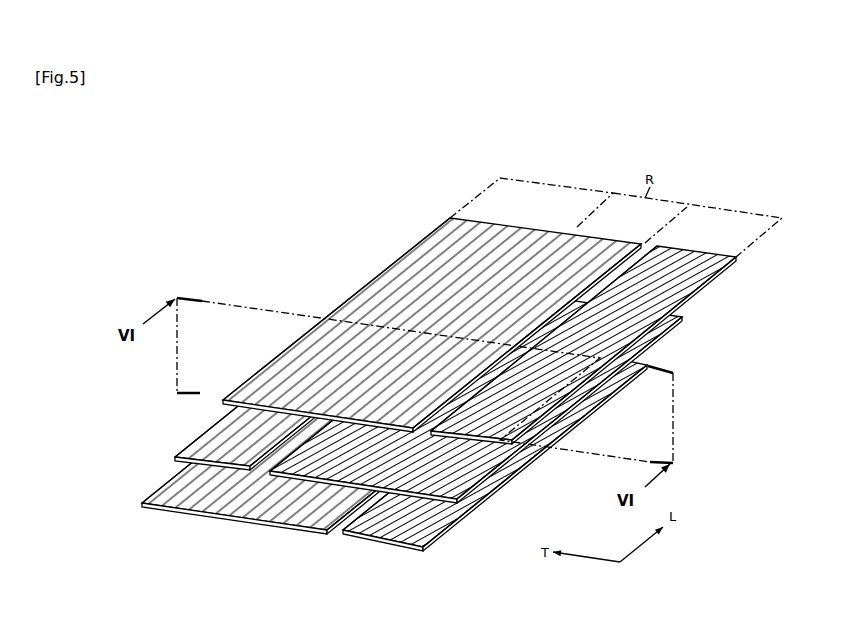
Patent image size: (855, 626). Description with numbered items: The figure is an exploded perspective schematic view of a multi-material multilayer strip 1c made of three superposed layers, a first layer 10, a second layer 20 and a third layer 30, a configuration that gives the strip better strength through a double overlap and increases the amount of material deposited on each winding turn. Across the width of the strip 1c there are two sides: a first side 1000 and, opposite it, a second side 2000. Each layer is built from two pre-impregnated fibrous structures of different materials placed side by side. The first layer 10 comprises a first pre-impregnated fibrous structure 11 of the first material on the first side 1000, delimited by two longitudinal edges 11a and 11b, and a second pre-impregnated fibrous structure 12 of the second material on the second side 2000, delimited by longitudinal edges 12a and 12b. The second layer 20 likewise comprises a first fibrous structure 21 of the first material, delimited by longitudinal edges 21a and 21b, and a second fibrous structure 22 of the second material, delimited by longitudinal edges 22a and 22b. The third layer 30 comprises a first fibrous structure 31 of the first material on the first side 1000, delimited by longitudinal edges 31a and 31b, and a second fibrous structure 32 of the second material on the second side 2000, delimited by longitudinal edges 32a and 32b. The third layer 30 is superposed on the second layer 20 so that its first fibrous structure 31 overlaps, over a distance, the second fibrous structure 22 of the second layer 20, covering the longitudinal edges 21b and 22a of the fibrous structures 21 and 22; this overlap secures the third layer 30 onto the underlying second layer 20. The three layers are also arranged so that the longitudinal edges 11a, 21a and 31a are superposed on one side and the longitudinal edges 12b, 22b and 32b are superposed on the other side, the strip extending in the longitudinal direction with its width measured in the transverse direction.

The multilayer strip 1c is at (448, 382).
The first layer 10 is at (387, 446).
The first pre-impregnated fibrous structure 11 is at (339, 443).
The longitudinal edge 11a is at (167, 482).
The longitudinal edge 11b is at (329, 532).
The second pre-impregnated fibrous structure 12 is at (493, 459).
The longitudinal edge 12a is at (347, 533).
The longitudinal edge 12b is at (598, 406).
The second layer 20 is at (425, 389).
The first pre-impregnated fibrous structure 21 is at (309, 372).
The longitudinal edge 21a is at (226, 416).
The longitudinal edge 21b is at (283, 443).
The second pre-impregnated fibrous structure 22 is at (490, 396).
The longitudinal edge 22a is at (297, 450).
The longitudinal edge 22b is at (672, 337).
The third layer 30 is at (496, 319).
The first pre-impregnated fibrous structure 31 is at (434, 313).
The longitudinal edge 31a is at (447, 221).
The longitudinal edge 31b is at (646, 240).
The second pre-impregnated fibrous structure 32 is at (600, 334).
The longitudinal edge 32a is at (661, 241).
The longitudinal edge 32b is at (729, 267).
The first side 1000 is at (560, 186).
The second side 2000 is at (745, 212).